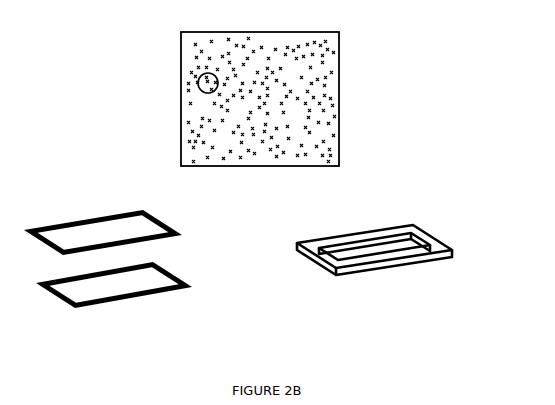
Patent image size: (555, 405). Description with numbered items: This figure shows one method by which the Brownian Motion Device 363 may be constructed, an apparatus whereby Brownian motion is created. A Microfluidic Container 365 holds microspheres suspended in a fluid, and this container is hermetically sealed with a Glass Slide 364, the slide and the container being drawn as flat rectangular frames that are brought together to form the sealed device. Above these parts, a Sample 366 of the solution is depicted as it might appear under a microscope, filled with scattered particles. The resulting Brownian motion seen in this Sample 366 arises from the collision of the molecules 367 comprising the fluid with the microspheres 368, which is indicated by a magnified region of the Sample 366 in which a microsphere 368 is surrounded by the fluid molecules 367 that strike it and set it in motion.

The Brownian Motion Device 363 is at (461, 234).
The Glass Slide 364 is at (172, 223).
The Microfluidic Container 365 is at (181, 266).
The Sample 366 is at (340, 101).
The molecules 367 is at (203, 77).
The microspheres 368 is at (197, 82).